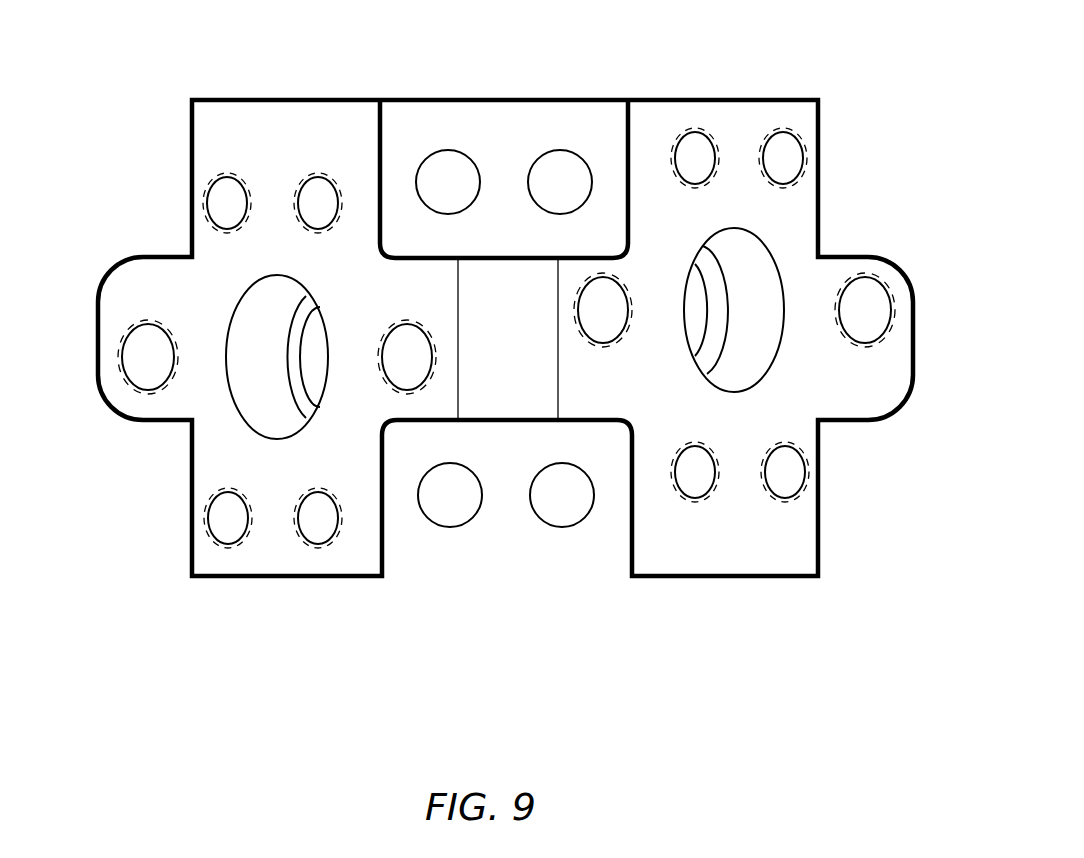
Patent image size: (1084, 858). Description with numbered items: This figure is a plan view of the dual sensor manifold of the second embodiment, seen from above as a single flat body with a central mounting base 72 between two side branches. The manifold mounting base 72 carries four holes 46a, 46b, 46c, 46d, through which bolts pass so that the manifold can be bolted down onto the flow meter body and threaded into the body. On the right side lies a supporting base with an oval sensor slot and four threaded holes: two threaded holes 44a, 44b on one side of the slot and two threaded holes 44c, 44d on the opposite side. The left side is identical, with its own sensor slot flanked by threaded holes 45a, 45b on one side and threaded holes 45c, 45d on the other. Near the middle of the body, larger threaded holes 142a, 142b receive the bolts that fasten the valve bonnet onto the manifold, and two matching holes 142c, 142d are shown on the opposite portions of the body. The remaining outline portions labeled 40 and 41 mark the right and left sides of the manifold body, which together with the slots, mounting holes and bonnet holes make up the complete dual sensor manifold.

The plate body right portion 40 is at (822, 450).
The plate body left portion 41 is at (192, 457).
The manifold mounting base 72 is at (500, 100).
The threaded hole 44a is at (700, 152).
The threaded hole 44b is at (790, 152).
The threaded hole 44c is at (697, 492).
The threaded hole 44d is at (792, 482).
The threaded hole 45a is at (227, 196).
The threaded hole 45b is at (312, 192).
The threaded hole 45c is at (220, 530).
The threaded hole 45d is at (315, 534).
The hole 46a is at (452, 517).
The hole 46b is at (562, 513).
The hole 46c is at (440, 165).
The hole 46d is at (568, 162).
The threaded hole 142a is at (140, 338).
The threaded hole 142b is at (400, 370).
The fastener hole 142c is at (605, 328).
The fastener hole 142d is at (872, 305).